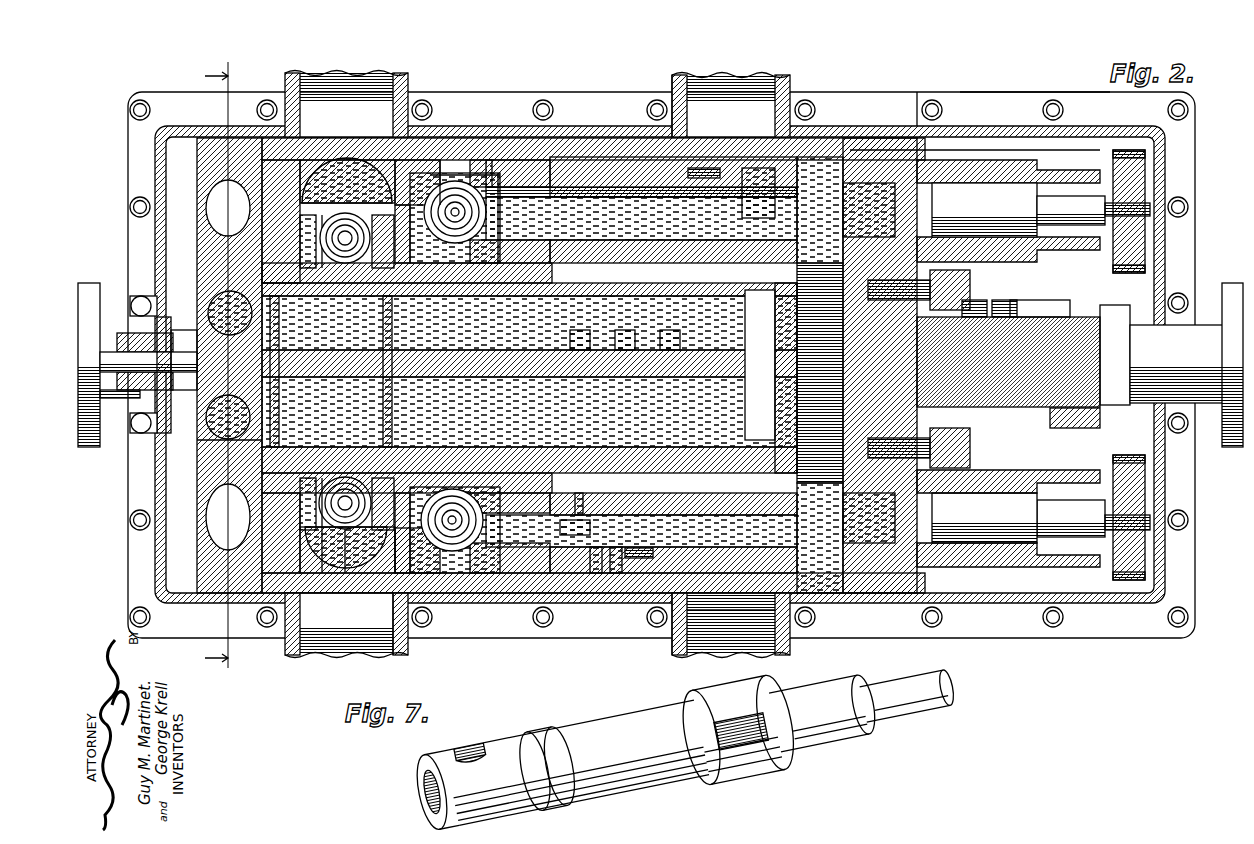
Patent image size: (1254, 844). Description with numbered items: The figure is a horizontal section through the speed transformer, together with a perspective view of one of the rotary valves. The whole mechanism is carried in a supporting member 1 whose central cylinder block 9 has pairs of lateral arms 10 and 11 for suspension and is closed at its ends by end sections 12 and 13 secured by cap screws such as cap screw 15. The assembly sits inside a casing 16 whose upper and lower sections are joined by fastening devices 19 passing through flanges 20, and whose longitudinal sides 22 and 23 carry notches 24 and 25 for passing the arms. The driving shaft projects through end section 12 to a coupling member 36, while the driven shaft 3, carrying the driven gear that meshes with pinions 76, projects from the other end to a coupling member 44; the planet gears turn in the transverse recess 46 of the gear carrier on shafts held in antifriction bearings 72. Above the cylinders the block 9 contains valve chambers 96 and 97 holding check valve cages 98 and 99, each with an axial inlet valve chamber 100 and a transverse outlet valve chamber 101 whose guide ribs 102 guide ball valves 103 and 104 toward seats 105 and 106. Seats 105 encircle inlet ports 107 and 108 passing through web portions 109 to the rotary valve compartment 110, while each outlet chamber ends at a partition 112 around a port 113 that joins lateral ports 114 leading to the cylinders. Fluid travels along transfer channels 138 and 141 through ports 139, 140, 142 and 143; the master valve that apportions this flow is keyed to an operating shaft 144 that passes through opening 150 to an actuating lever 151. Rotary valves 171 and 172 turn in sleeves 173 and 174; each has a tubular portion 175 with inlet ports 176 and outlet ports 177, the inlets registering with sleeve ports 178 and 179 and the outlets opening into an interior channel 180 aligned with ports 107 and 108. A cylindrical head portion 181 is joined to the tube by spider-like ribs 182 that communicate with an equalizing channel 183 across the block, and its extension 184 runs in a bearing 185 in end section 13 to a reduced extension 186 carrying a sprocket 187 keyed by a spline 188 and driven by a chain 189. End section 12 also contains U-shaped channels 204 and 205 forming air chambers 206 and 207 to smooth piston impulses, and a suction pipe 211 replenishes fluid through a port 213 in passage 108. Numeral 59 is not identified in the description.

In FIG. 2, the supporting member 1 is at (810, 150).
In FIG. 2, the driven shaft 3 is at (1143, 342).
In FIG. 2, the cylinder block 9 is at (575, 542).
In FIG. 2, the lateral arm 10 is at (290, 640).
In FIG. 2, the lateral arm 11 is at (407, 84).
In FIG. 2, the end section 12 is at (197, 236).
In FIG. 2, the end section 13 is at (1090, 320).
In FIG. 2, the cap screw 15 is at (963, 283).
In FIG. 2, the casing 16 is at (917, 124).
In FIG. 2, the fastening device 19 is at (1087, 106).
In FIG. 2, the flange 20 is at (1013, 104).
In FIG. 2, the longitudinal side 22 is at (616, 575).
In FIG. 2, the longitudinal side 23 is at (428, 116).
In FIG. 2, the notch 24 is at (673, 638).
In FIG. 2, the notch 25 is at (674, 86).
In FIG. 2, the coupling member 36 is at (99, 288).
In FIG. 2, the coupling member 44 is at (1232, 288).
In FIG. 2, the transverse recess 46 is at (1007, 436).
In FIG. 2, the bushing 59 is at (1114, 420).
In FIG. 2, the antifriction bearing 72 is at (970, 440).
In FIG. 2, the pinion 76 is at (1010, 311).
In FIG. 2, the valve chamber 96 is at (265, 593).
In FIG. 2, the valve chamber 97 is at (270, 136).
In FIG. 2, the check valve cage 98 is at (263, 573).
In FIG. 2, the check valve cage 99 is at (276, 159).
In FIG. 2, the inlet valve chamber 100 is at (454, 180).
In FIG. 2, the outlet valve chamber 101 is at (303, 234).
In FIG. 2, the guide rib 102 is at (450, 552).
In FIG. 2, the ball valve 103 is at (478, 174).
In FIG. 2, the ball valve 104 is at (335, 544).
In FIG. 2, the valve seat 105 is at (493, 560).
In FIG. 2, the valve seat 106 is at (321, 236).
In FIG. 2, the inlet port 107 is at (527, 550).
In FIG. 2, the inlet port 108 is at (490, 164).
In FIG. 2, the web portion 109 is at (445, 174).
In FIG. 2, the rotary valve compartment 110 is at (593, 573).
In FIG. 2, the partition 112 is at (321, 512).
In FIG. 2, the port 113 is at (300, 600).
In FIG. 2, the lateral port 114 is at (348, 547).
In FIG. 2, the transfer channel 138 is at (706, 354).
In FIG. 2, the port 139 is at (233, 440).
In FIG. 2, the port 140 is at (420, 416).
In FIG. 2, the transfer channel 141 is at (740, 352).
In FIG. 2, the port 142 is at (233, 288).
In FIG. 2, the port 143 is at (529, 316).
In FIG. 2, the operating shaft 144 is at (113, 336).
In FIG. 2, the opening 150 is at (190, 318).
In FIG. 2, the actuating lever 151 is at (100, 394).
In FIG. 2, the rotary valve 171 is at (735, 570).
In FIG. 7, the rotary valve 171 is at (420, 770).
In FIG. 2, the rotary valve 172 is at (598, 165).
In FIG. 2, the sleeve 173 is at (725, 635).
In FIG. 2, the sleeve 174 is at (582, 183).
In FIG. 7, the tubular portion 175 is at (455, 813).
In FIG. 2, the inlet port 176 is at (708, 168).
In FIG. 7, the inlet port 176 is at (535, 726).
In FIG. 2, the outlet port 177 is at (760, 177).
In FIG. 7, the outlet port 177 is at (483, 735).
In FIG. 2, the port 178 is at (622, 285).
In FIG. 2, the port 179 is at (736, 282).
In FIG. 2, the interior channel 180 is at (897, 210).
In FIG. 7, the interior channel 180 is at (428, 789).
In FIG. 2, the cylindrical head portion 181 is at (910, 157).
In FIG. 7, the cylindrical head portion 181 is at (783, 750).
In FIG. 2, the spider-like rib 182 is at (827, 176).
In FIG. 7, the spider-like rib 182 is at (705, 765).
In FIG. 2, the equalizing channel 183 is at (785, 396).
In FIG. 2, the extension 184 is at (1055, 185).
In FIG. 7, the extension 184 is at (832, 710).
In FIG. 2, the bearing 185 is at (1007, 172).
In FIG. 2, the reduced extension 186 is at (1110, 203).
In FIG. 7, the reduced extension 186 is at (946, 689).
In FIG. 2, the sprocket 187 is at (1140, 177).
In FIG. 2, the spline 188 is at (1140, 515).
In FIG. 2, the chain 189 is at (1136, 573).
In FIG. 2, the U-shaped channel 204 is at (233, 421).
In FIG. 2, the U-shaped channel 205 is at (233, 301).
In FIG. 2, the air chamber 206 is at (206, 508).
In FIG. 2, the air chamber 207 is at (206, 196).
In FIG. 2, the suction pipe 211 is at (510, 245).
In FIG. 2, the port 213 is at (500, 188).